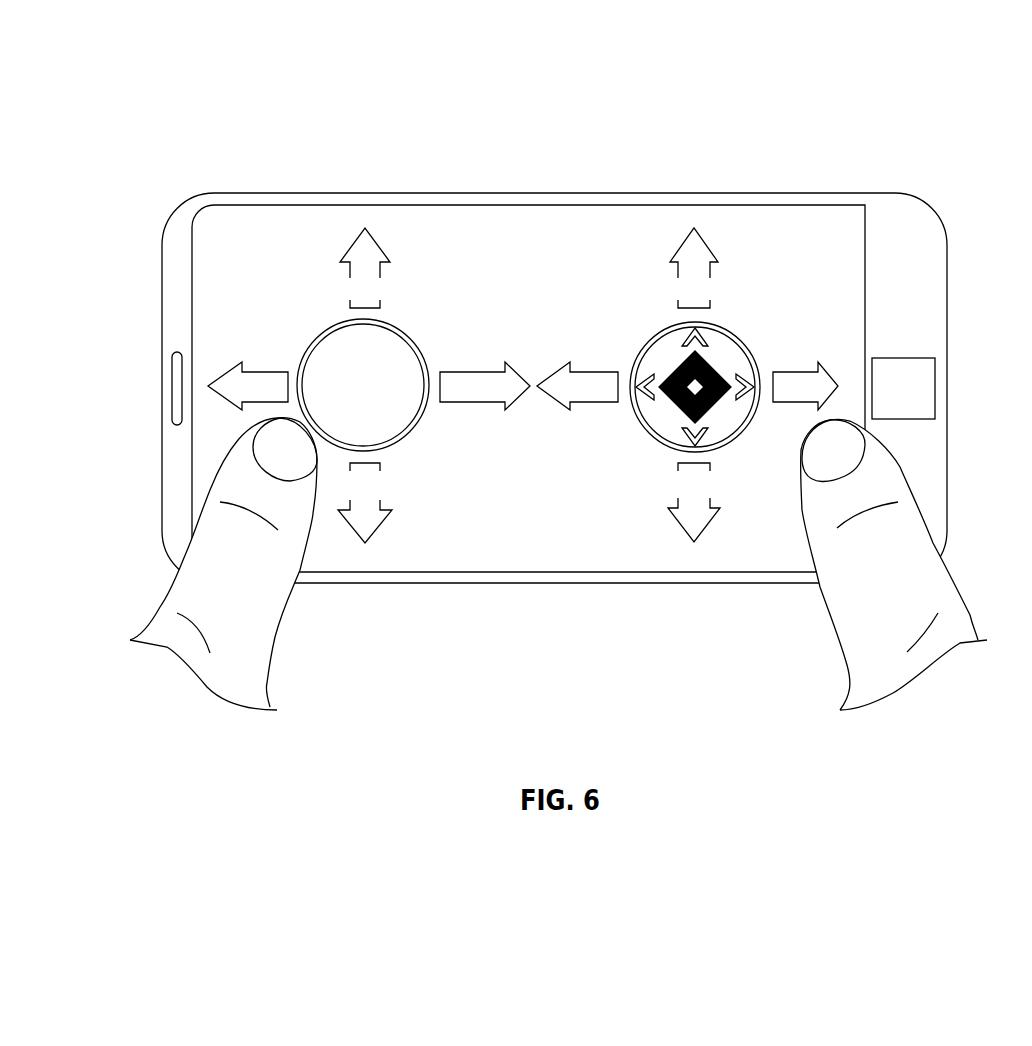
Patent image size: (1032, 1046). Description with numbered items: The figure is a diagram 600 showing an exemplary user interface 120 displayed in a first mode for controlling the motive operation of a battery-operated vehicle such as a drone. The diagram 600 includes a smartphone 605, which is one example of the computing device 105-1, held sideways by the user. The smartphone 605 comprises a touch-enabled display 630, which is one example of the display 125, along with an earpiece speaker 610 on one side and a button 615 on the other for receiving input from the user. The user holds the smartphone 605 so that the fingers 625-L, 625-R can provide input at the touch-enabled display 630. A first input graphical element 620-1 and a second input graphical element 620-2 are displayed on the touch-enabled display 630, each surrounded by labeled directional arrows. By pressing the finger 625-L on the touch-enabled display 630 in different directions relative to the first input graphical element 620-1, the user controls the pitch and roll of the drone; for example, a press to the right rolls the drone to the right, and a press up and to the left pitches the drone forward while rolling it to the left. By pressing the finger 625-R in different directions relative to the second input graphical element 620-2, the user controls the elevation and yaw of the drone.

The diagram 600 is at (179, 159).
The smartphone 605 is at (928, 212).
The computing device 105-1 is at (575, 365).
The earpiece speaker 610 is at (172, 388).
The button 615 is at (936, 392).
The touch-enabled display 630 is at (608, 232).
The display 125 is at (528, 357).
The user interface 120 is at (530, 428).
The first input graphical element 620-1 is at (308, 346).
The second input graphical element 620-2 is at (752, 346).
The finger (left) 625-L is at (278, 638).
The finger (right) 625-R is at (840, 637).